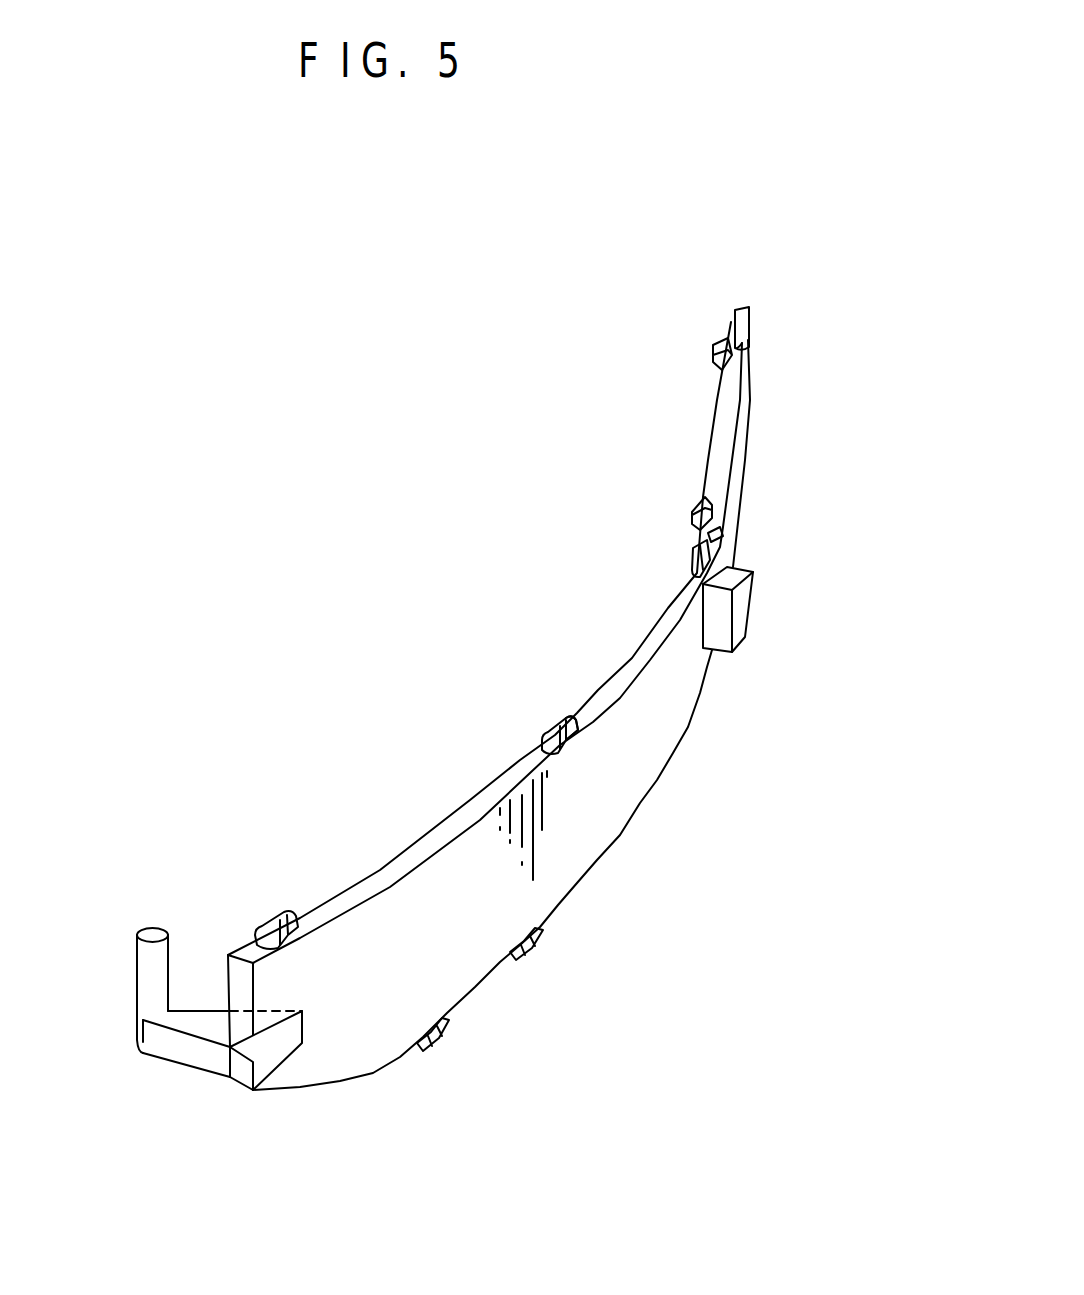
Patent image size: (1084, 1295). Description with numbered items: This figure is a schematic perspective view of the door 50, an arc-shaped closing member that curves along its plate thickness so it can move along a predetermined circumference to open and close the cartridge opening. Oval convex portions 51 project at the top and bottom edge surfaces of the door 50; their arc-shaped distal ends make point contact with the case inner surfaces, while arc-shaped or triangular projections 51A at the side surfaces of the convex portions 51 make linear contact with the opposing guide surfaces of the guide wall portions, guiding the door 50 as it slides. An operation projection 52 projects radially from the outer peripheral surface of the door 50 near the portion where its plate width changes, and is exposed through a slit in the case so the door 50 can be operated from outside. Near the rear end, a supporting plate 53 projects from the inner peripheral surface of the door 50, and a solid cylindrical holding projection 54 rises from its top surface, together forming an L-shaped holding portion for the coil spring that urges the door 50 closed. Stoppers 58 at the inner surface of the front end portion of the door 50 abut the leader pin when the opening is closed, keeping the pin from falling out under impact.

The door 50 is at (848, 218).
The convex portions 51 is at (740, 318).
The projections 51A is at (578, 727).
The operation projection 52 is at (747, 610).
The supporting plate 53 is at (177, 1053).
The holding projection 54 is at (133, 962).
The stoppers 58 is at (700, 504).